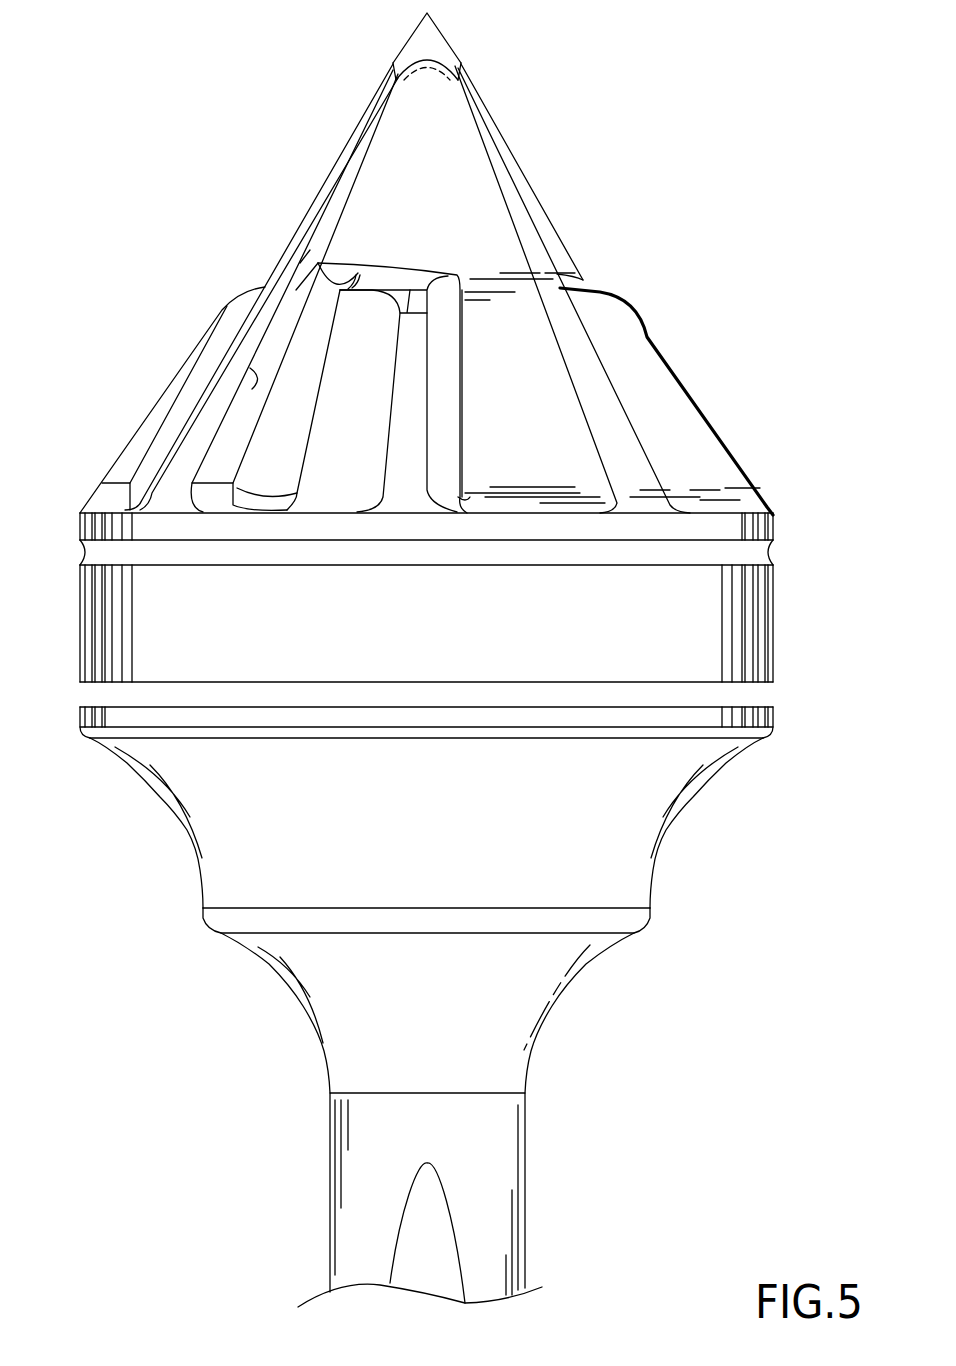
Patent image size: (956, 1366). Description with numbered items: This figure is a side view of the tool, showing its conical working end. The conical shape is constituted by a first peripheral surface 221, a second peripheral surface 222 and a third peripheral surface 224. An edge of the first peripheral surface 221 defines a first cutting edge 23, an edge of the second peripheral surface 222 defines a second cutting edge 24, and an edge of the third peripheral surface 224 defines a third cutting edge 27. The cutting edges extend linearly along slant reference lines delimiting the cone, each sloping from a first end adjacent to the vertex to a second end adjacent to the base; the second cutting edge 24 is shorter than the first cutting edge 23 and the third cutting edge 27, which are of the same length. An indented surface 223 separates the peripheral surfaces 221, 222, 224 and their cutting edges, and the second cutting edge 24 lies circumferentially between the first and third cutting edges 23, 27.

The first cutting edge 23 is at (250, 368).
The first peripheral surface 221 is at (208, 408).
The second peripheral surface 222 is at (405, 448).
The indented surface 223 is at (418, 266).
The second cutting edge 24 is at (427, 397).
The third peripheral surface 224 is at (615, 423).
The third cutting edge 27 is at (650, 462).